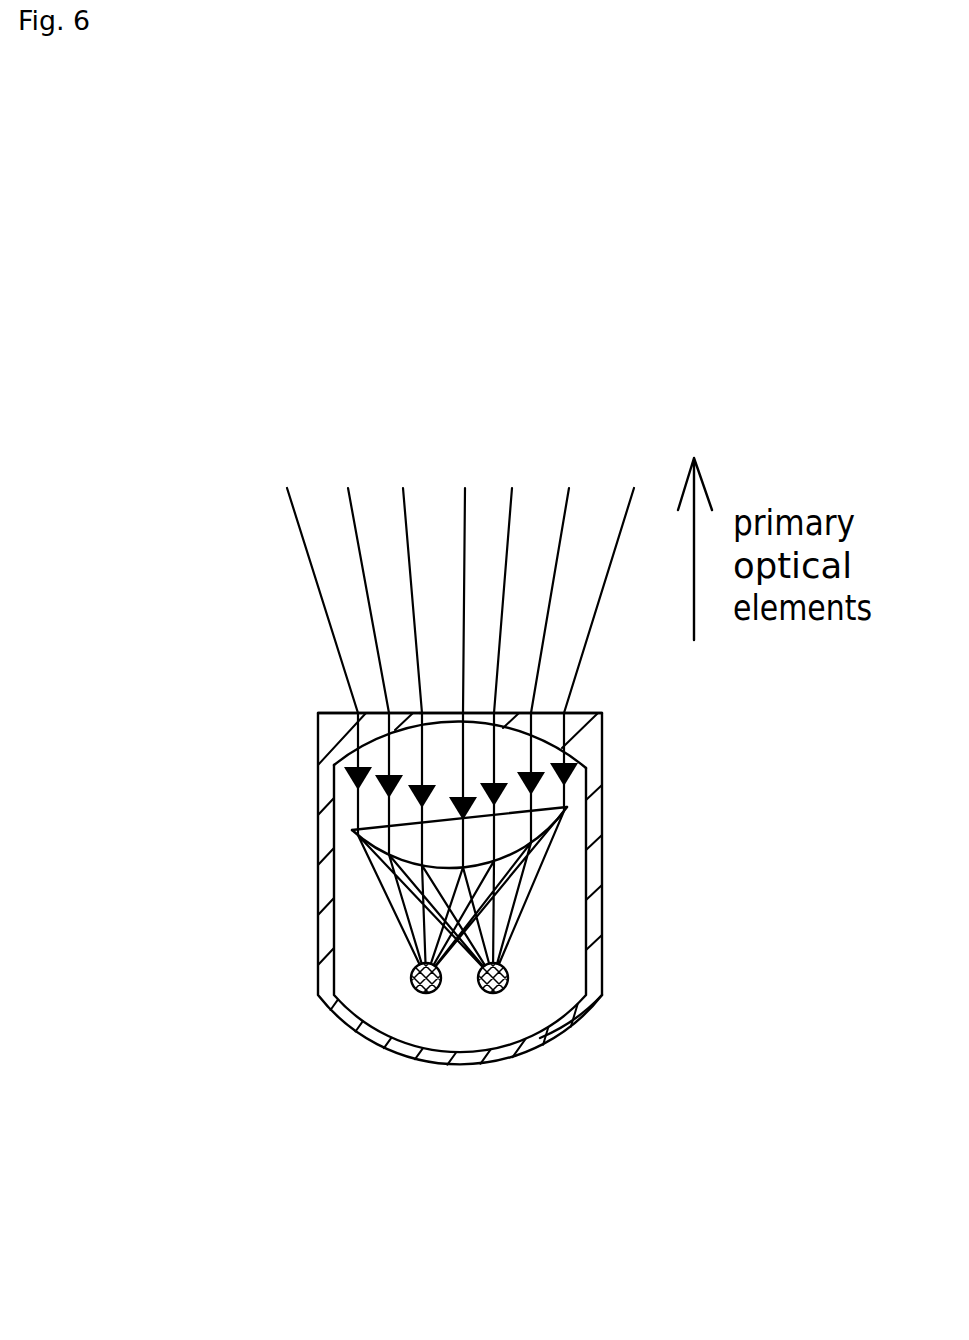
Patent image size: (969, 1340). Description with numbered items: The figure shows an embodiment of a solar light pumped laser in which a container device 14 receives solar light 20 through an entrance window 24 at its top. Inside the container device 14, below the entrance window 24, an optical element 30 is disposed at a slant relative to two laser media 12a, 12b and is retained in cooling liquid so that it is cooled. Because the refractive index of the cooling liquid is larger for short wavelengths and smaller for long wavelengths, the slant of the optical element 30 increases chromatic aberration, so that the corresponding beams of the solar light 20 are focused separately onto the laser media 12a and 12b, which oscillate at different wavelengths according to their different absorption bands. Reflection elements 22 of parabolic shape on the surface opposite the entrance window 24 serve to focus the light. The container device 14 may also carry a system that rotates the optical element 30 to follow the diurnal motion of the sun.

The container device 14 is at (594, 868).
The solar light 20 is at (568, 712).
The reflection elements 22 is at (583, 1008).
The entrance window 24 is at (367, 712).
The optical element 30 is at (563, 833).
The laser medium 12a is at (421, 993).
The laser medium 12b is at (483, 993).